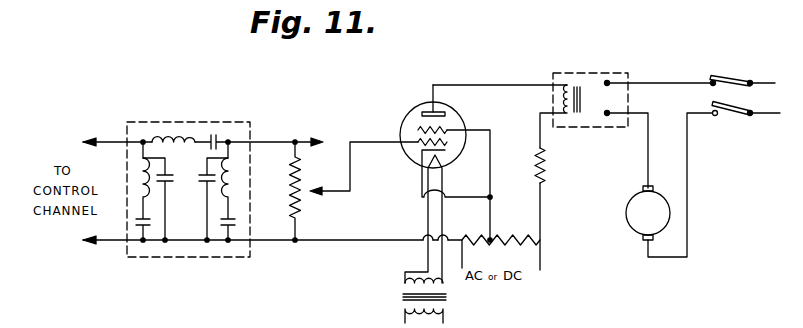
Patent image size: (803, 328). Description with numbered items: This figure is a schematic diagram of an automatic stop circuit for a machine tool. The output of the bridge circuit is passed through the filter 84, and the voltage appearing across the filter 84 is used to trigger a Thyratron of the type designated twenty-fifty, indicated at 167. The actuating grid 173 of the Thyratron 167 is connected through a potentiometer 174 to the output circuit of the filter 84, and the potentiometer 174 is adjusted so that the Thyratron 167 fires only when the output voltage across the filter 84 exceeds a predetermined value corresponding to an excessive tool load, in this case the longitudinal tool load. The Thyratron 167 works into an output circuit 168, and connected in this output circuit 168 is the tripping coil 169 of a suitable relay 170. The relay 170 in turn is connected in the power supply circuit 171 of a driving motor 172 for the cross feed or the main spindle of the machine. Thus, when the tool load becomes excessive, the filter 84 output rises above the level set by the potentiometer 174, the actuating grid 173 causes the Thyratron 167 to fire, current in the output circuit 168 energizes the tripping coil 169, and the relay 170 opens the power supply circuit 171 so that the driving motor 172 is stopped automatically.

The filter 84 is at (238, 122).
The Thyratron 2050 167 is at (445, 100).
The output circuit 168 is at (500, 85).
The tripping coil 169 is at (567, 114).
The relay 170 is at (630, 78).
The power supply circuit 171 is at (649, 157).
The driving motor 172 is at (671, 213).
The actuating grid 173 is at (423, 143).
The potentiometer 174 is at (299, 214).